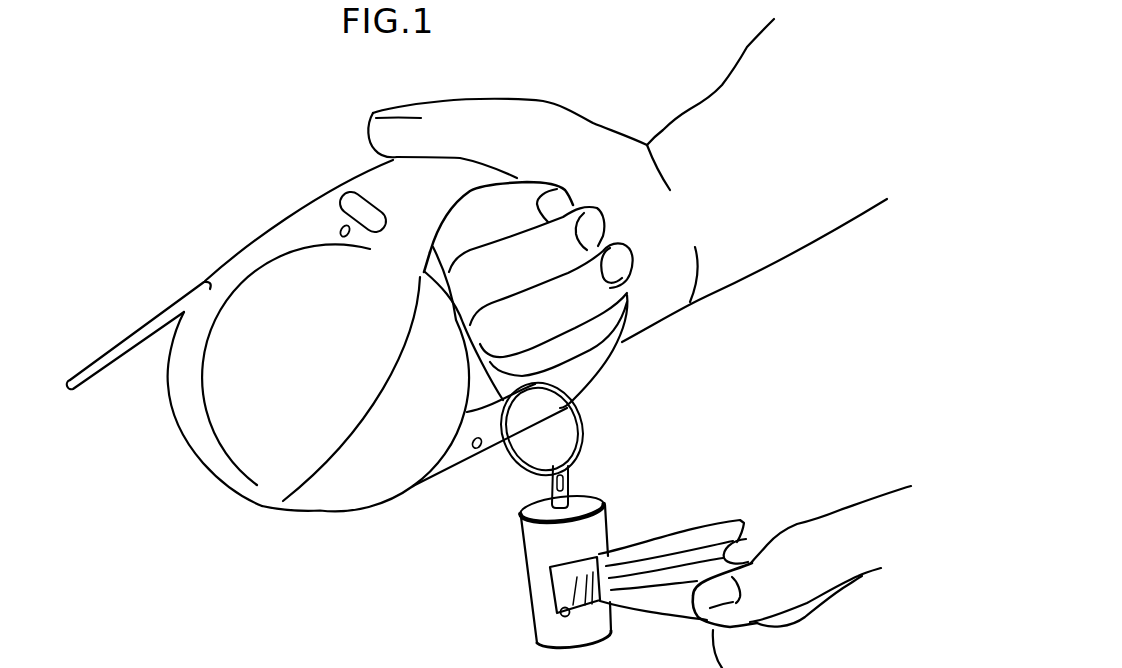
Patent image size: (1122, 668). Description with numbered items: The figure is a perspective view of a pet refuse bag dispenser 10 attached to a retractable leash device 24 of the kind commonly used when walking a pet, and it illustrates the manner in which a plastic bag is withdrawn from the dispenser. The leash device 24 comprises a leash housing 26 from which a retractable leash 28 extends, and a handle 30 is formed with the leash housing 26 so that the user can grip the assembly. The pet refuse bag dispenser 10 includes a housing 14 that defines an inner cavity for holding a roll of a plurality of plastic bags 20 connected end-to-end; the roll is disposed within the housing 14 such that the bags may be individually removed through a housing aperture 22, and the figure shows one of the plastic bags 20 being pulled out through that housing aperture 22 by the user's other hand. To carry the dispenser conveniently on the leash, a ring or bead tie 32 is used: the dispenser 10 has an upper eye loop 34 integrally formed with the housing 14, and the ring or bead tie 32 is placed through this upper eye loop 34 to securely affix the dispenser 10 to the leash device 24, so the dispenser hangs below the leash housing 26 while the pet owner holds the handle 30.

The pet refuse bag dispenser 10 is at (568, 566).
The housing 14 is at (522, 575).
The plastic bags 20 is at (688, 518).
The housing aperture 22 is at (572, 616).
The leash device 24 is at (284, 211).
The leash housing 26 is at (257, 506).
The retractable leash 28 is at (123, 347).
The handle 30 is at (605, 373).
The ring or bead tie 32 is at (519, 463).
The upper eye loop 34 is at (586, 480).